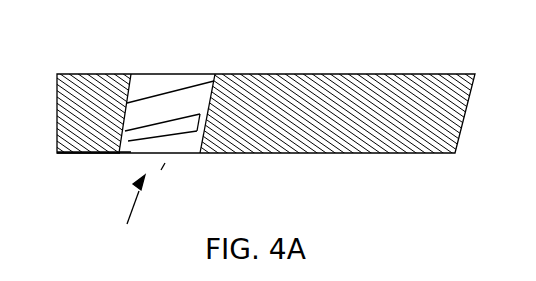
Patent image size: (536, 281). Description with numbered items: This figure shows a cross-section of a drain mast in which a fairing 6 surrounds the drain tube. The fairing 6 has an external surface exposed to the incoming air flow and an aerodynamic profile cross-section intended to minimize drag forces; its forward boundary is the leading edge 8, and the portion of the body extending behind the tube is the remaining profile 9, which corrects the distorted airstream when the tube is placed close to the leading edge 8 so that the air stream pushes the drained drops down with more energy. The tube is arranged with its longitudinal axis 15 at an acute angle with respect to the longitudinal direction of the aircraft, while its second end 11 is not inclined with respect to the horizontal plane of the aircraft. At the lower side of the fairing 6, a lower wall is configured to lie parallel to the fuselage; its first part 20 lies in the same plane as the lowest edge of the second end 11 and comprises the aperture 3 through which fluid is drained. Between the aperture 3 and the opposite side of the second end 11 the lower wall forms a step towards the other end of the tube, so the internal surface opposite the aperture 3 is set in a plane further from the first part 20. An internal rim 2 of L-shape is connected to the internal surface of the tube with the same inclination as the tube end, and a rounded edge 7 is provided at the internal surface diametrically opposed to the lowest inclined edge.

The fairing 6 is at (388, 130).
The remaining profile 9 is at (324, 138).
The leading edge 8 is at (74, 150).
The first part of the lower wall 20 is at (92, 150).
The aperture 3 is at (123, 141).
The rounded edge 7 is at (202, 150).
The longitudinal axis 15 is at (182, 78).
The internal rim 2 is at (198, 127).
The second end 11 is at (136, 215).